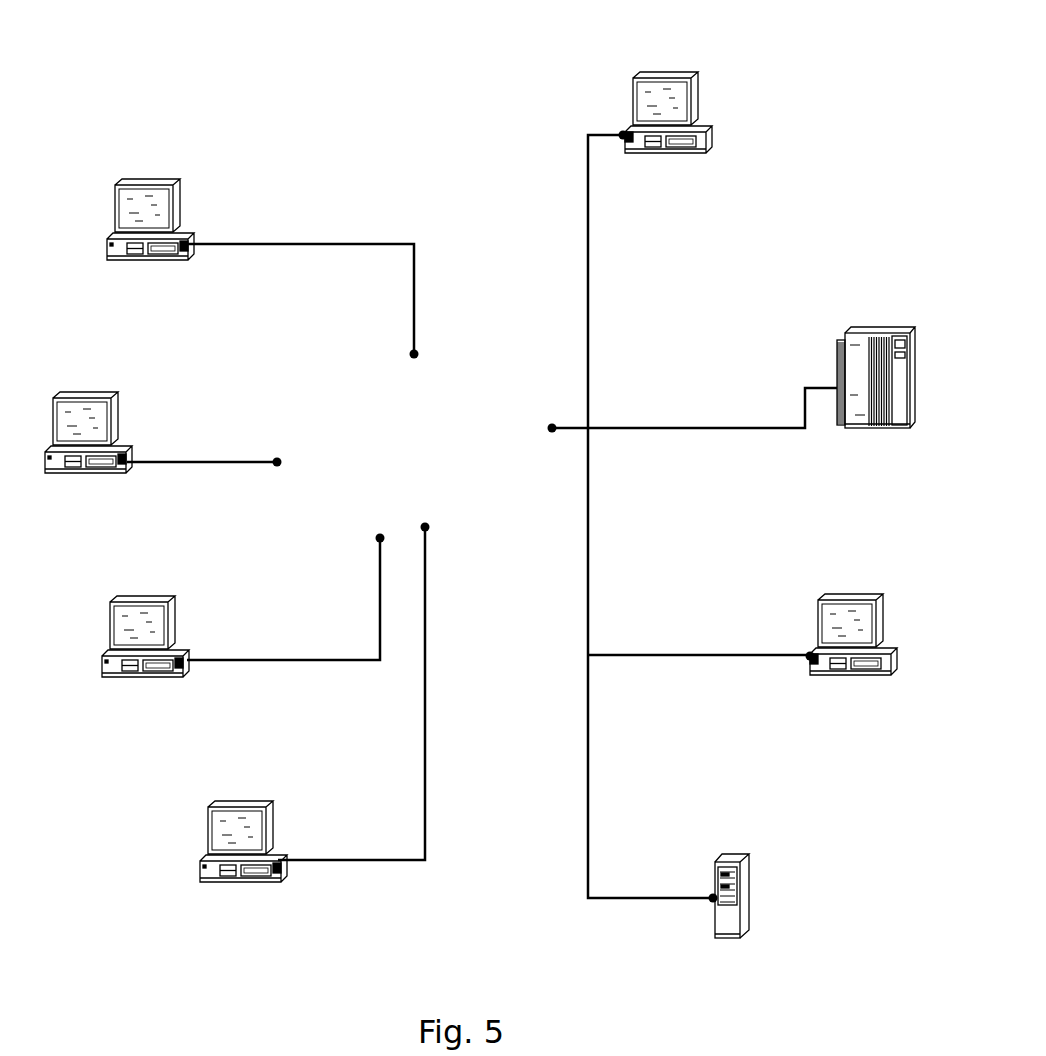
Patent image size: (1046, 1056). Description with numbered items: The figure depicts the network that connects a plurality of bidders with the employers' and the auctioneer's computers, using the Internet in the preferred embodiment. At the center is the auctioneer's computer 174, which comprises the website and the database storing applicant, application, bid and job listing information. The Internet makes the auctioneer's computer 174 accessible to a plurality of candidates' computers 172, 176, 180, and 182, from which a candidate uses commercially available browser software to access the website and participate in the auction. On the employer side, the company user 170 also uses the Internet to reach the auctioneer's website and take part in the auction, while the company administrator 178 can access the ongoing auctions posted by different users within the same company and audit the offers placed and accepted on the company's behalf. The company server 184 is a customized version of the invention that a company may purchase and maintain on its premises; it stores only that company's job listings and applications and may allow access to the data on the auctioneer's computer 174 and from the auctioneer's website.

The company user 170 is at (667, 107).
The candidate's computer 172 is at (176, 215).
The auctioneer's computer 174 is at (883, 375).
The candidate's computer 176 is at (109, 446).
The company administrator 178 is at (849, 626).
The candidate's computer 180 is at (164, 640).
The candidate's computer 182 is at (258, 834).
The company server 184 is at (730, 890).